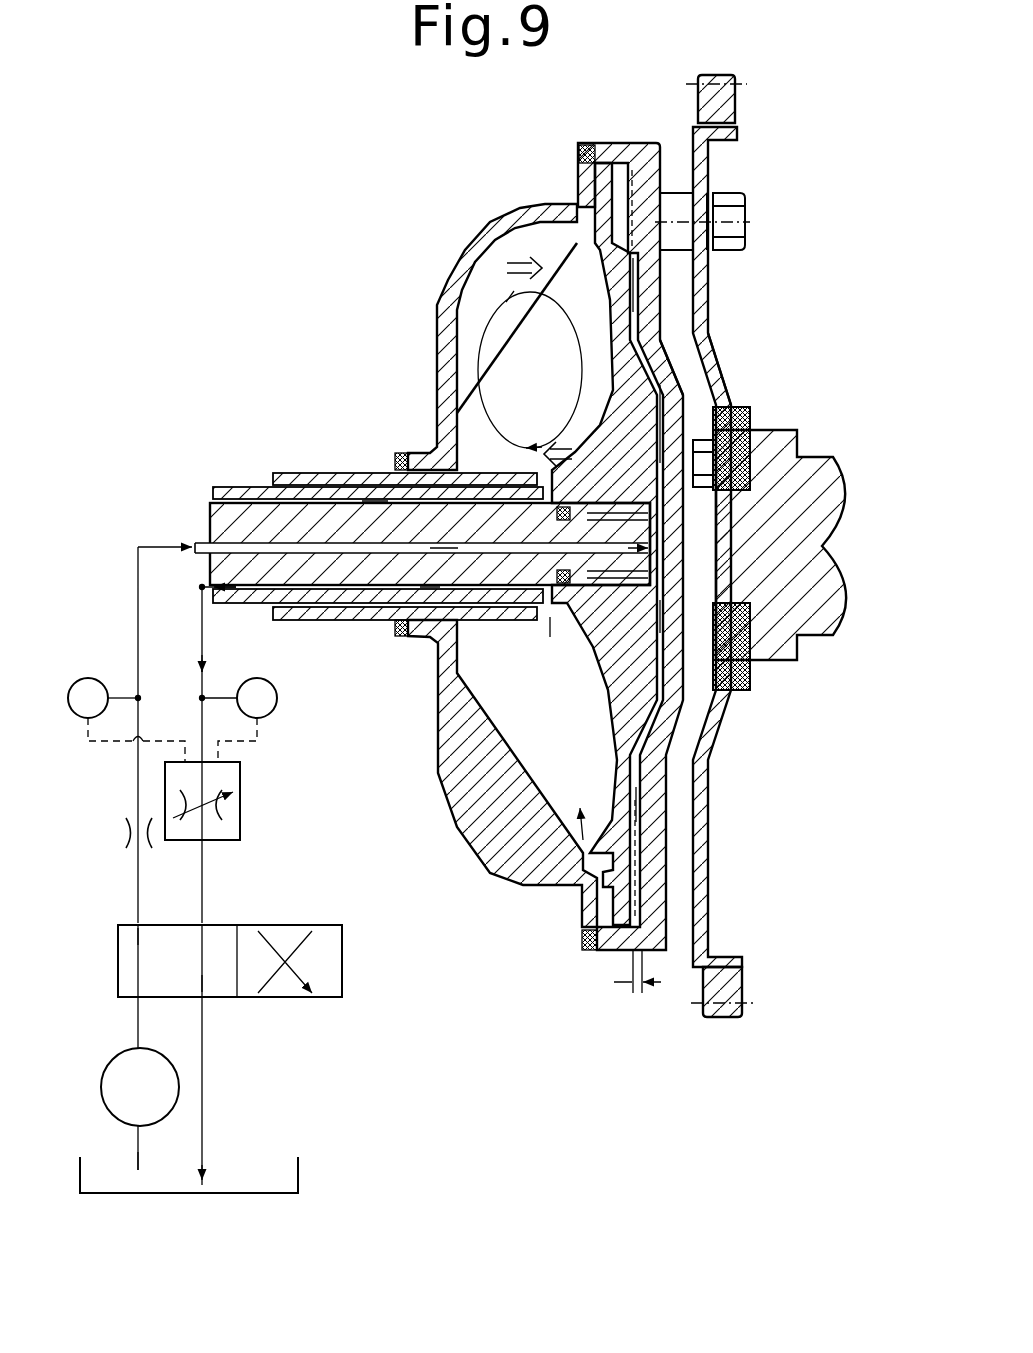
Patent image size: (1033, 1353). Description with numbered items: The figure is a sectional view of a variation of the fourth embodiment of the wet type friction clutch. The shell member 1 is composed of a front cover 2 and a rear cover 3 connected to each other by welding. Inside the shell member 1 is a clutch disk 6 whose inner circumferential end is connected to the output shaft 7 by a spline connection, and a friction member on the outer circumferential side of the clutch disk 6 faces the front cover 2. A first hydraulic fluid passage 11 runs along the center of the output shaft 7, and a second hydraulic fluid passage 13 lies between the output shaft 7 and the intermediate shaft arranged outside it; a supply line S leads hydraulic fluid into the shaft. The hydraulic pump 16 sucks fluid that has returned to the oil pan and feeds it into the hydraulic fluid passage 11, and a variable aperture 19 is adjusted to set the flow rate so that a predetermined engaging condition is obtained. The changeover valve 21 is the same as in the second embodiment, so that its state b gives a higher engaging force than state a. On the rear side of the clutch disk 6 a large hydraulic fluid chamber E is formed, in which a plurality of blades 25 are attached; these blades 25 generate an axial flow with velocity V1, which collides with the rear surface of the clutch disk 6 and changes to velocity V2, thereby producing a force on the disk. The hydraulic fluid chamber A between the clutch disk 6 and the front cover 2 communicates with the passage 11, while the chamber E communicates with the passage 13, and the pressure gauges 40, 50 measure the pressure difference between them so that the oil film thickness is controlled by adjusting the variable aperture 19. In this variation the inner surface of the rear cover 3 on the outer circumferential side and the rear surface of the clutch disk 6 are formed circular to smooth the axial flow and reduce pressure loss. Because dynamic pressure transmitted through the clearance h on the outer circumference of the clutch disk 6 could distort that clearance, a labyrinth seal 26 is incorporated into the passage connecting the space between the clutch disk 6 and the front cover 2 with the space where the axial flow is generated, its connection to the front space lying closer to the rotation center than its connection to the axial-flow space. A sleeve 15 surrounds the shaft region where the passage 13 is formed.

The shell member 1 is at (620, 136).
The front cover 2 is at (653, 300).
The rear cover 3 is at (463, 250).
The clutch disk 6 is at (681, 388).
The output shaft 7 is at (387, 575).
The first hydraulic fluid passage 11 is at (346, 556).
The second hydraulic fluid passage 13 is at (230, 500).
The bushing 15 is at (308, 477).
The hydraulic pump 16 is at (103, 1080).
The variable aperture 19 is at (240, 792).
The changeover valve 21 is at (300, 997).
The blades 25 is at (480, 306).
The labyrinth seal 26 is at (605, 193).
The pressure gauge 40 is at (97, 678).
The pressure gauge 50 is at (273, 683).
The supply line S is at (182, 545).
The hydraulic fluid chamber E is at (487, 448).
The hydraulic fluid chamber A is at (722, 388).
The velocity of axial flow V1 is at (524, 254).
The velocity after collision V2 is at (568, 446).
The clearance h is at (637, 984).